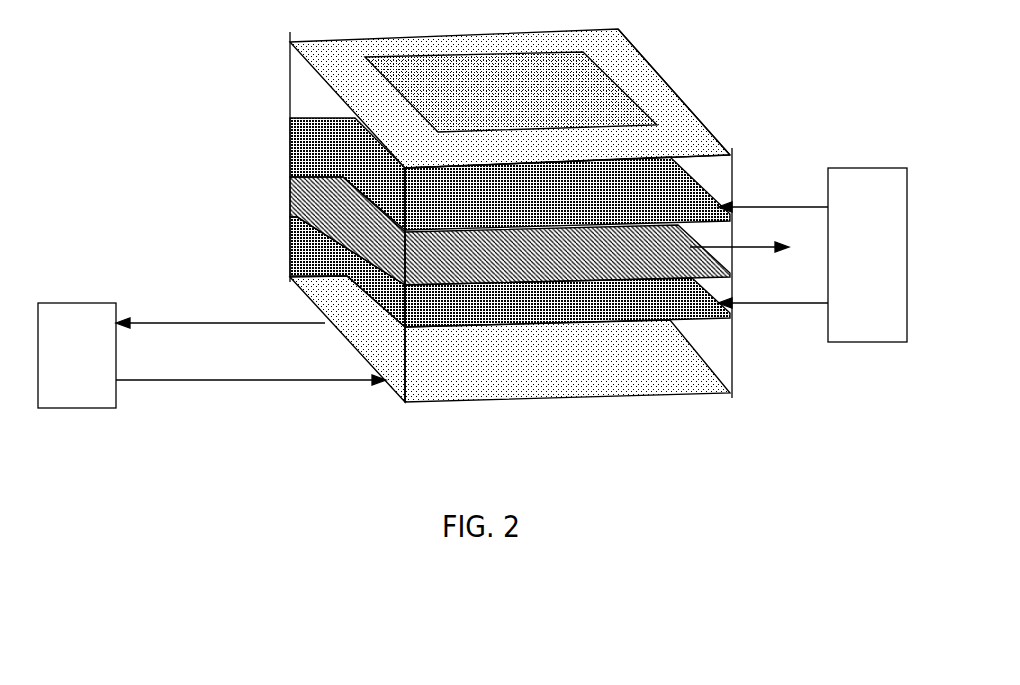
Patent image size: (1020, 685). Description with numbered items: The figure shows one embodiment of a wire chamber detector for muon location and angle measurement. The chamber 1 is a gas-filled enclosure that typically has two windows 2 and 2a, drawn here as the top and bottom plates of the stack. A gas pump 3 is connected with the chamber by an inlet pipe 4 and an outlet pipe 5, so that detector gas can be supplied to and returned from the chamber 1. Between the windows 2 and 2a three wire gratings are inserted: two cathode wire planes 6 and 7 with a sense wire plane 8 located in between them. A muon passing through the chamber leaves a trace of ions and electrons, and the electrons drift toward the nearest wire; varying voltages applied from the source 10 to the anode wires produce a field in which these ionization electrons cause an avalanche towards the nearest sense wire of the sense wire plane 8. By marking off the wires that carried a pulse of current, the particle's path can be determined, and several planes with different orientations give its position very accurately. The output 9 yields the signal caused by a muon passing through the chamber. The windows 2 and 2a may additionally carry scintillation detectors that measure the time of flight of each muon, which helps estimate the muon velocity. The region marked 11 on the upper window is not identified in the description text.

The chamber 1 is at (511, 206).
The window 2 is at (567, 98).
The window 2a is at (510, 339).
The gas pump 3 is at (77, 355).
The inlet pipe 4 is at (251, 370).
The outlet pipe 5 is at (220, 312).
The cathode wire plane 6 is at (432, 119).
The cathode wire plane 7 is at (405, 272).
The sense wire plane 8 is at (412, 204).
The output 9 is at (747, 256).
The source 10 is at (812, 255).
The active window region 11 is at (511, 92).